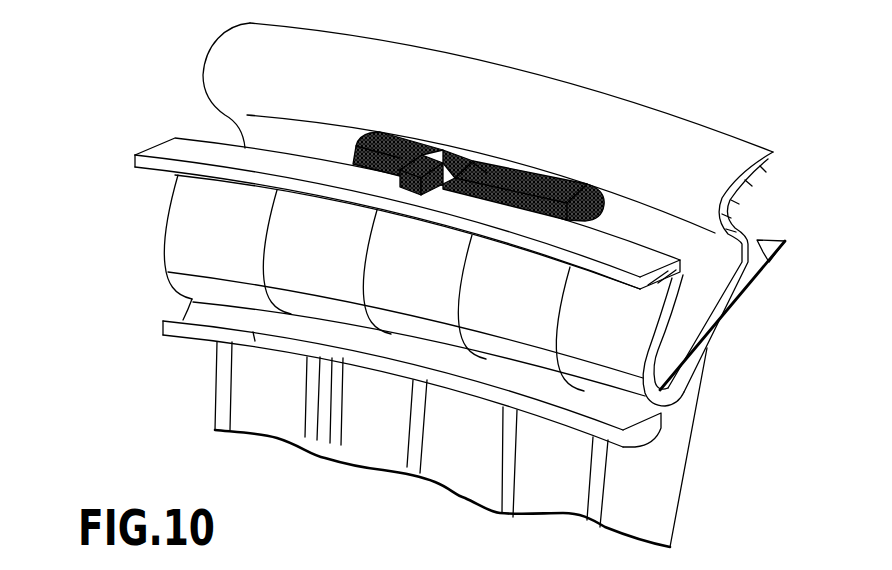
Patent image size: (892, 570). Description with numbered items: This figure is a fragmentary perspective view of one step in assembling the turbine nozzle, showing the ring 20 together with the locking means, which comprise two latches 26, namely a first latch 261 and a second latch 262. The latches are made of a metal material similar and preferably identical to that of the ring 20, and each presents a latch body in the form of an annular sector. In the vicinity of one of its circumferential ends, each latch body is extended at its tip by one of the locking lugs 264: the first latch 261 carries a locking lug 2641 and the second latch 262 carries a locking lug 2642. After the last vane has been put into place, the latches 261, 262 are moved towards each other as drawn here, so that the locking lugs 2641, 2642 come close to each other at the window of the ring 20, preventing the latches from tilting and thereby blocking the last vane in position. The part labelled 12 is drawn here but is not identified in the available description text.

The ring 20 is at (212, 65).
The heat sink base with fins 12 is at (354, 427).
The latches 26 is at (478, 144).
The latch 261 is at (378, 148).
The latch 262 is at (530, 198).
The locking lugs 264 is at (478, 131).
The locking lug 2641 is at (426, 165).
The locking lug 2642 is at (440, 172).